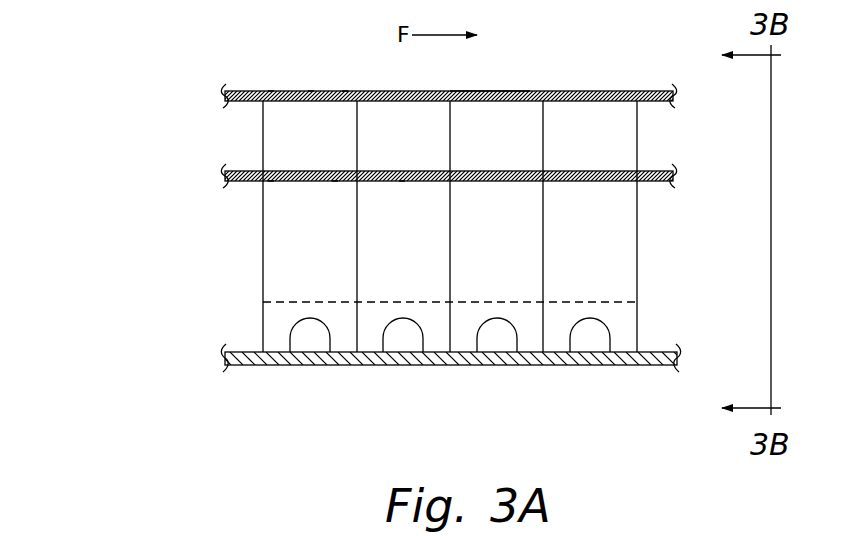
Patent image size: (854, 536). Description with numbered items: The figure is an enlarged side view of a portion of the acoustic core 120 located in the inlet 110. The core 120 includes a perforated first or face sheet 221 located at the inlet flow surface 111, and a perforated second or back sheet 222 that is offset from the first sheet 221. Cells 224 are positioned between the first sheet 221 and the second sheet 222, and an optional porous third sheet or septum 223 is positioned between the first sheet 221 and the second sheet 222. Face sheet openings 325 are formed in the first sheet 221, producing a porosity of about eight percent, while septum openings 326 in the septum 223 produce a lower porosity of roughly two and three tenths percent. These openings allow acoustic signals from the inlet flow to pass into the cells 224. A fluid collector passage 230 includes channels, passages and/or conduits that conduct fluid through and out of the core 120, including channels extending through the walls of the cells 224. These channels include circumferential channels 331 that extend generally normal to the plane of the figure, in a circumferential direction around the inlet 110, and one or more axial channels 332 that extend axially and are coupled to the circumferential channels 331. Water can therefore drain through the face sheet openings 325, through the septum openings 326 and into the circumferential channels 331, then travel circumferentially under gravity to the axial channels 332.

The inlet 110 is at (144, 154).
The inlet flow surface 111 is at (490, 91).
The core 120 is at (180, 109).
The first sheet 221 is at (660, 91).
The second sheet 222 is at (574, 366).
The septum 223 is at (652, 182).
The cells 224 is at (482, 264).
The fluid collector passage 230 is at (255, 320).
The face sheet openings 325 is at (345, 91).
The septum openings 326 is at (402, 182).
The circumferential channels 331 is at (404, 342).
The axial channels 332 is at (637, 302).